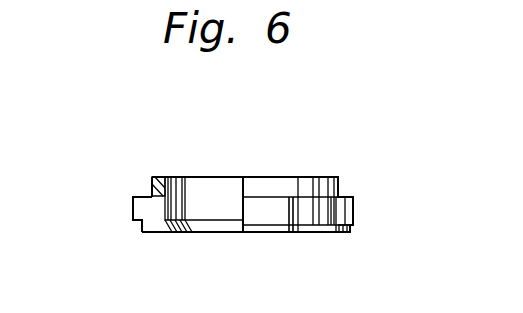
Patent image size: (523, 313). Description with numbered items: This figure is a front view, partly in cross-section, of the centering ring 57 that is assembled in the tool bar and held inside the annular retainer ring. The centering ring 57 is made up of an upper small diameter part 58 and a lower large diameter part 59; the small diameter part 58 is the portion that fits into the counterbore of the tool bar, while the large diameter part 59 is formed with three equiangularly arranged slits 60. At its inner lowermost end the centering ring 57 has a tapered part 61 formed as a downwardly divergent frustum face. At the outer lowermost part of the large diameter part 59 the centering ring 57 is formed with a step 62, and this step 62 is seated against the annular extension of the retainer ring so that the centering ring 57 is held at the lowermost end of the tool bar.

The centering ring 57 is at (324, 172).
The upper small diameter part 58 is at (153, 184).
The lower large diameter part 59 is at (350, 207).
The slit 60 is at (140, 211).
The tapered part 61 is at (175, 233).
The step 62 is at (345, 232).